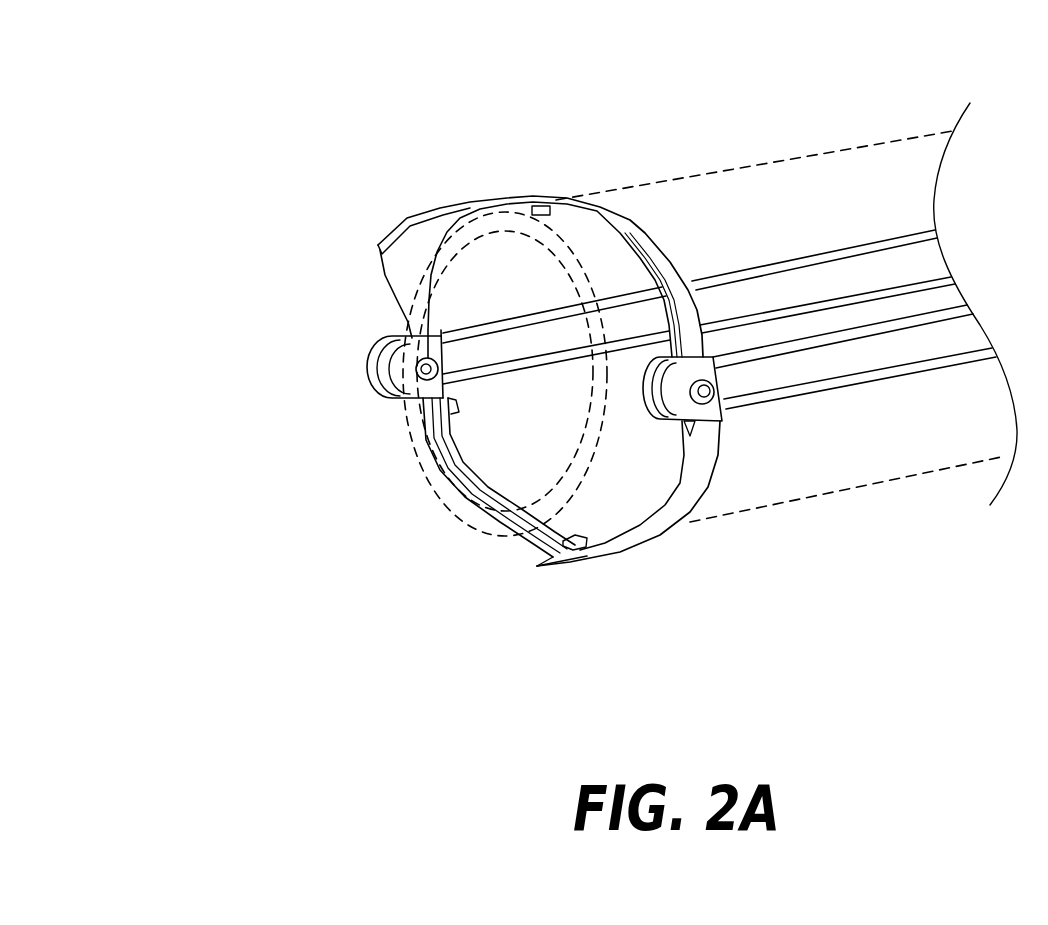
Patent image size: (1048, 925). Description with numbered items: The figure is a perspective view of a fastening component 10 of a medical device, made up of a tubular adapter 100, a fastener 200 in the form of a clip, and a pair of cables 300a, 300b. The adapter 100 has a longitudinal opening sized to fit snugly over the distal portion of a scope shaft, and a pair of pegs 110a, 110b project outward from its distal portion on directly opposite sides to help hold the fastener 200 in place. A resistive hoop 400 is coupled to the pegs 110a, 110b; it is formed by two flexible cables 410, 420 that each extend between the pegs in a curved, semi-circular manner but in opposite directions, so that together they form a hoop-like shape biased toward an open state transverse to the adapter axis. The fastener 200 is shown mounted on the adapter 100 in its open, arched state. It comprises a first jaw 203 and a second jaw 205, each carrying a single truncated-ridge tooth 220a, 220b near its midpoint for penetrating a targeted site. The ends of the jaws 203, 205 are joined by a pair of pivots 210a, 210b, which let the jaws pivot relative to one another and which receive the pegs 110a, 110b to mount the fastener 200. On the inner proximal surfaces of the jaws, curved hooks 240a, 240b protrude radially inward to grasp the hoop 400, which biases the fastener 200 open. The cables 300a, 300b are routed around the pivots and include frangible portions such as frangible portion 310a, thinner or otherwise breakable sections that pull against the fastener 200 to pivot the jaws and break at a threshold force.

The fastening component 10 is at (238, 121).
The adapter 100 is at (733, 200).
The fastener 200 is at (688, 549).
The first jaw 203 is at (663, 265).
The second jaw 205 is at (693, 497).
The pivot 210a is at (413, 386).
The pivot 210b is at (722, 414).
The tooth 220a is at (422, 236).
The tooth 220b is at (627, 545).
The hook 240a is at (542, 206).
The hook 240b is at (535, 543).
The cable 300a is at (912, 362).
The cable 300b is at (818, 258).
The peg 110a is at (413, 375).
The peg 110b is at (722, 390).
The frangible portion 310a is at (415, 367).
The hoop 400 is at (398, 240).
The cable 410 is at (380, 252).
The cable 420 is at (443, 406).